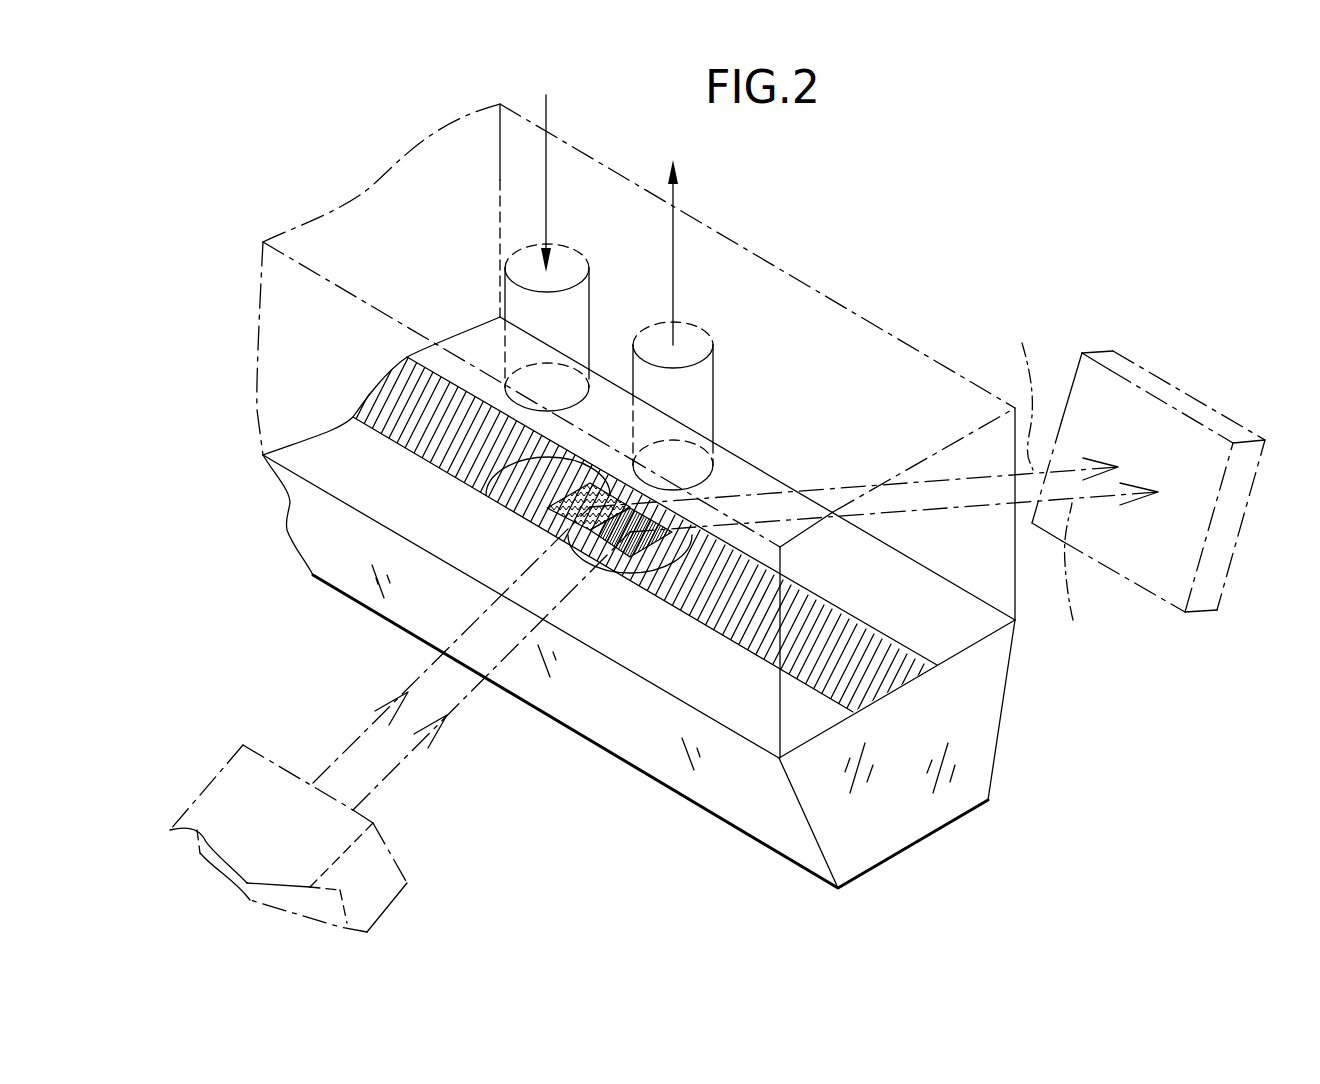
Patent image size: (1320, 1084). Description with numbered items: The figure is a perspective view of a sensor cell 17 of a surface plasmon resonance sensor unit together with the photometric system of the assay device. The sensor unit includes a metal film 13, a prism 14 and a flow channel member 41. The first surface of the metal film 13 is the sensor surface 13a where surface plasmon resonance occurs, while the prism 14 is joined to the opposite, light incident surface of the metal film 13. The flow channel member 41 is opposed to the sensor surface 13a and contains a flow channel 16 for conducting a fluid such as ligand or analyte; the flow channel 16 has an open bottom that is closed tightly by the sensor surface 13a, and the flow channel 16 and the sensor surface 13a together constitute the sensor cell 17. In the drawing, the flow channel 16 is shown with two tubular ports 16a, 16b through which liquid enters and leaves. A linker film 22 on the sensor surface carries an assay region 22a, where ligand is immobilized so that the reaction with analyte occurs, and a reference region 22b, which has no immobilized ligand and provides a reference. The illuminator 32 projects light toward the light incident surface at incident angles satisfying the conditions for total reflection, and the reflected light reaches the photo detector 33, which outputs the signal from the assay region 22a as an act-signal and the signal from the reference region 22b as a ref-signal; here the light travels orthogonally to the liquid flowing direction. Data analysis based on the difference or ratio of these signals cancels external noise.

The metal film 13 is at (848, 615).
The sensor surface 13a is at (690, 580).
The prism 14 is at (1000, 762).
The flow channel 16 is at (631, 292).
The inlet tube 16a is at (523, 277).
The outlet tube 16b is at (700, 335).
The sensor cell 17 is at (500, 472).
The linker film 22 is at (646, 633).
The assay region 22a is at (500, 486).
The reference region 22b is at (587, 533).
The illuminator 32 is at (405, 877).
The photo detector 33 is at (1198, 612).
The flow channel member 41 is at (902, 330).